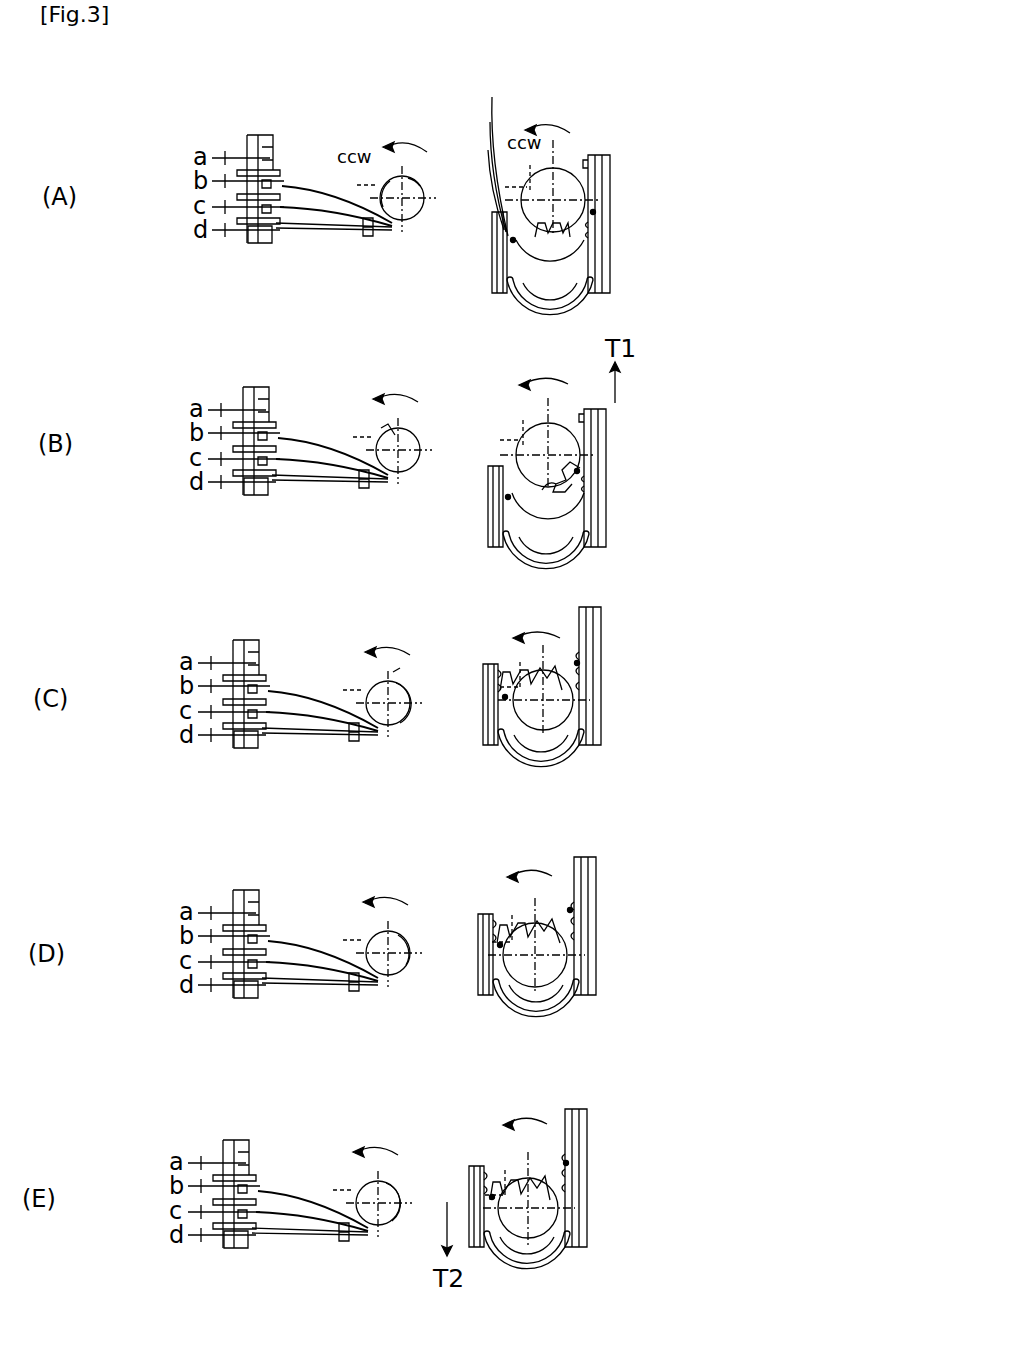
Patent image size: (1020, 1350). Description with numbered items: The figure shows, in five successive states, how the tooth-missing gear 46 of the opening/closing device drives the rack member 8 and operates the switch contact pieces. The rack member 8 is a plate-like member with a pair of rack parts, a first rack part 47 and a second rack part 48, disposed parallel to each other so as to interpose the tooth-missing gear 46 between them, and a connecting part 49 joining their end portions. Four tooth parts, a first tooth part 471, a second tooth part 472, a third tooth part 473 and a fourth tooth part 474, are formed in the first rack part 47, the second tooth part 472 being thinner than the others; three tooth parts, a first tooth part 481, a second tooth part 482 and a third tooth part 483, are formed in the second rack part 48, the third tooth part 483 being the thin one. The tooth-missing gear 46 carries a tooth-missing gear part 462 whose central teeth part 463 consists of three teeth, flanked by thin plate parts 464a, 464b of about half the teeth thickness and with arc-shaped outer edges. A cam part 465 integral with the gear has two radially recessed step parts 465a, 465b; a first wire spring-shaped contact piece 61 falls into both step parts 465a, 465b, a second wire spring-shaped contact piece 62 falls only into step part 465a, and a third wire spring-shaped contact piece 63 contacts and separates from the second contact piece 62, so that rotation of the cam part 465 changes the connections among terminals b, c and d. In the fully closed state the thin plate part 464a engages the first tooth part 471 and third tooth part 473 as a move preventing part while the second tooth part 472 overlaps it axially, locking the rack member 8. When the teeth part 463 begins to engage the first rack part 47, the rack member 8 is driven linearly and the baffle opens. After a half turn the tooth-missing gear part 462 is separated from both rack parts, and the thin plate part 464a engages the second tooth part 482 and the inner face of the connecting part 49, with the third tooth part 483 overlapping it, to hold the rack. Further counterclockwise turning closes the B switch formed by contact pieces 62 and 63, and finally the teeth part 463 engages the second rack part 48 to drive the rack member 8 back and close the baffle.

The rack member 8 is at (620, 237).
The tooth-missing gear 46 is at (560, 182).
The first rack part 47 is at (665, 215).
The second rack part 48 is at (434, 84).
The connecting part 49 is at (620, 288).
The first wire spring-shaped contact piece 61 is at (284, 207).
The second wire spring-shaped contact piece 62 is at (290, 188).
The third wire spring-shaped contact piece 63 is at (308, 226).
The tooth-missing gear part 462 is at (712, 425).
The teeth part 463 is at (510, 262).
The thin plate part 464a is at (576, 449).
The thin plate part 464b is at (570, 486).
The cam part 465 is at (408, 208).
The step part 465a is at (413, 174).
The step part 465b is at (396, 668).
The first tooth part 471 is at (590, 162).
The second tooth part 472 is at (596, 211).
The third tooth part 473 is at (590, 225).
The fourth tooth part 474 is at (592, 236).
The first tooth part 481 is at (457, 96).
The second tooth part 482 is at (457, 119).
The third tooth part 483 is at (457, 143).